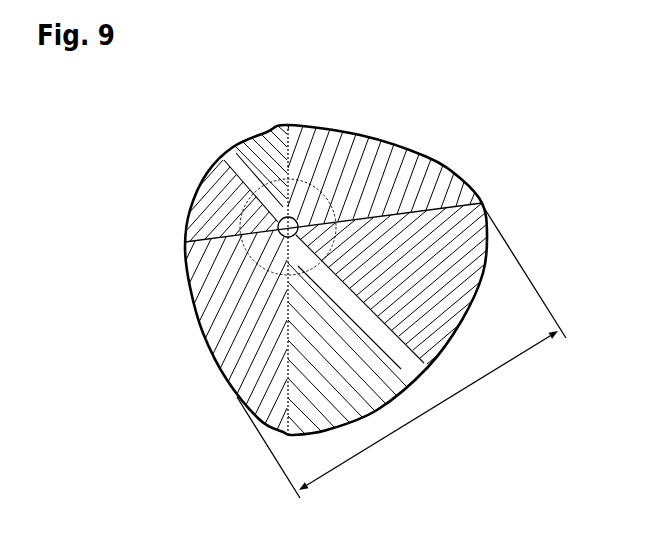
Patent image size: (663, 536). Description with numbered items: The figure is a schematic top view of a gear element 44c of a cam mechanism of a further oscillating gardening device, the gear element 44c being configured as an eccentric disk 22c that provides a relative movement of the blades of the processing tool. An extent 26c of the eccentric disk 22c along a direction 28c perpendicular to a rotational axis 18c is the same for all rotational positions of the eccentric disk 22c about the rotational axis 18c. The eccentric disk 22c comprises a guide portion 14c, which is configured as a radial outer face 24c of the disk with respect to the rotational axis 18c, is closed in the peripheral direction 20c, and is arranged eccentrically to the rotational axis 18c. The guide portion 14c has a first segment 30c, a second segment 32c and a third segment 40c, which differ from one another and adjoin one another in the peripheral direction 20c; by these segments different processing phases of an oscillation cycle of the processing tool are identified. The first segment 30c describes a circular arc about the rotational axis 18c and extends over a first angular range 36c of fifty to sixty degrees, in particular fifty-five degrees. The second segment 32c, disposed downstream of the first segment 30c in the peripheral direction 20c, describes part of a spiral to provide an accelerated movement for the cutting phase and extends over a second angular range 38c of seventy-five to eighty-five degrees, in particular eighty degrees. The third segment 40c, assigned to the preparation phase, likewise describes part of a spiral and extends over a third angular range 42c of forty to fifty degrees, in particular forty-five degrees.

The guide portion 14c is at (178, 229).
The radial outer face 24c is at (178, 229).
The rotational axis 18c is at (296, 219).
The first angular range 36c is at (246, 222).
The second angular range 38c is at (243, 250).
The third angular range 42c is at (277, 176).
The third segment 40c is at (232, 119).
The first segment 30c is at (190, 161).
The eccentric disk 22c is at (412, 156).
The gear element 44c is at (412, 156).
The second segment 32c is at (185, 346).
The peripheral direction 20c is at (519, 203).
The direction 28c is at (587, 232).
The extent 26c is at (429, 411).